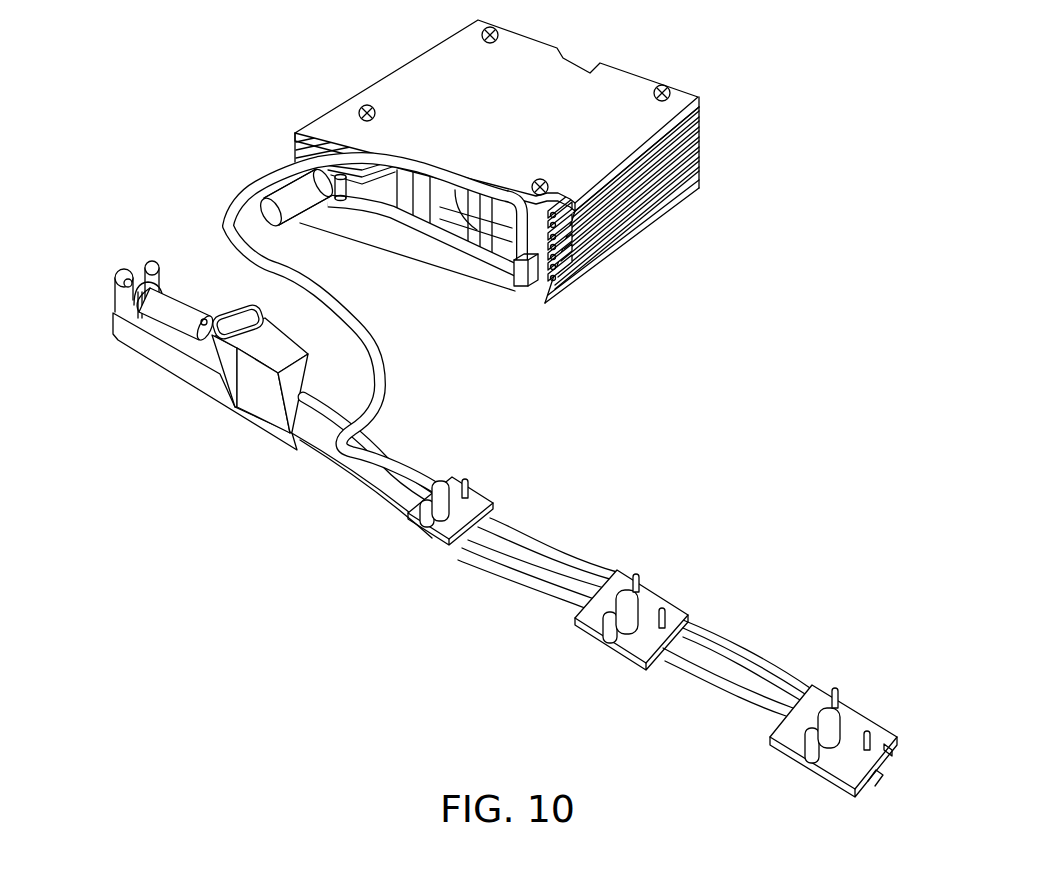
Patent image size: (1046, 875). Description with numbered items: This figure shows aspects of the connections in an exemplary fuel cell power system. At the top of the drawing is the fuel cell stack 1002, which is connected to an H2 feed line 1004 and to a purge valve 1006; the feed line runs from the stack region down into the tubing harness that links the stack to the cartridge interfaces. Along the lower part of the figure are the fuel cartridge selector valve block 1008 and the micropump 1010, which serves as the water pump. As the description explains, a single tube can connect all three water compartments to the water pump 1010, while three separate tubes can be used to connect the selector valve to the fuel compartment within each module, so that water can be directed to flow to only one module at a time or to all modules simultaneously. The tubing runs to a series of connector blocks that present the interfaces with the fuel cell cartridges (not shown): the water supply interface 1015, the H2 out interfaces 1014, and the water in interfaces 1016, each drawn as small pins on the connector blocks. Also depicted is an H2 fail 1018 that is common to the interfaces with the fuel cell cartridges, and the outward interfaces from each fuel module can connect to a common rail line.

The fuel cell stack 1002 is at (617, 82).
The H2 feed line 1004 is at (237, 208).
The purge valve 1006 is at (292, 195).
The fuel cartridge selector valve block 1008 is at (147, 342).
The micropump 1010 is at (258, 398).
The H2 out interfaces 1014 is at (637, 573).
The water supply interface 1015 is at (465, 480).
The water in interfaces 1016 is at (663, 607).
The H2 fail 1018 is at (757, 668).